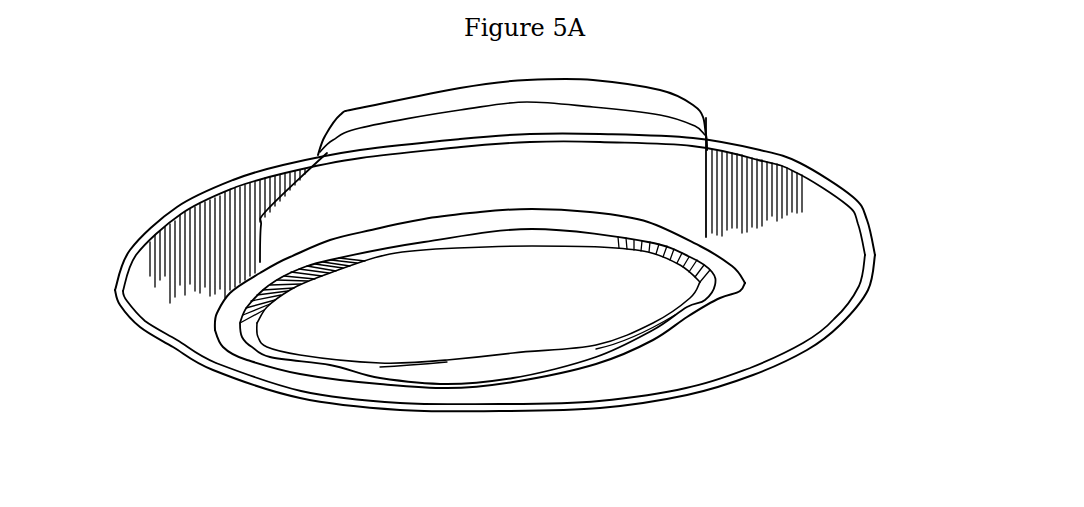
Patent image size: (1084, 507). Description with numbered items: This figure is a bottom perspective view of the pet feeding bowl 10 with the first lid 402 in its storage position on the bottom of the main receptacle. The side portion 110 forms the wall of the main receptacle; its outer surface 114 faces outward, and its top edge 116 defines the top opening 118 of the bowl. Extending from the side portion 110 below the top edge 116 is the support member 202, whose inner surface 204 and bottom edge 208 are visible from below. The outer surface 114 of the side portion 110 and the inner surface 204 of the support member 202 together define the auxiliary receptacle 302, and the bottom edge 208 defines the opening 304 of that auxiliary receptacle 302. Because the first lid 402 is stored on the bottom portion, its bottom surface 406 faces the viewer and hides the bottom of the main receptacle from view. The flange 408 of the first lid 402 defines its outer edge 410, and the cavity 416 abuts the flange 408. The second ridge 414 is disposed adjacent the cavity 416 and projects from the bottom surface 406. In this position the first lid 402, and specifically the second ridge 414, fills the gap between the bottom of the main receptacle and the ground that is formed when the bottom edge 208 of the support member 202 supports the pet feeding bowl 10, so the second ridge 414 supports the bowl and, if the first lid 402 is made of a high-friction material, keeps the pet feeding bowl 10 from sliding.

The pet feeding bowl 10 is at (272, 75).
The side portion 110 is at (355, 200).
The outer surface 114 is at (491, 194).
The top edge 116 is at (660, 107).
The top opening 118 is at (583, 80).
The support member 202 is at (760, 150).
The inner surface 204 is at (812, 274).
The bottom edge 208 is at (853, 197).
The auxiliary receptacle 302 is at (182, 328).
The opening 304 is at (396, 412).
The first lid 402 is at (293, 243).
The bottom surface 406 is at (492, 307).
The flange 408 is at (713, 297).
The outer edge 410 is at (745, 287).
The second ridge 414 is at (677, 323).
The cavity 416 is at (253, 345).